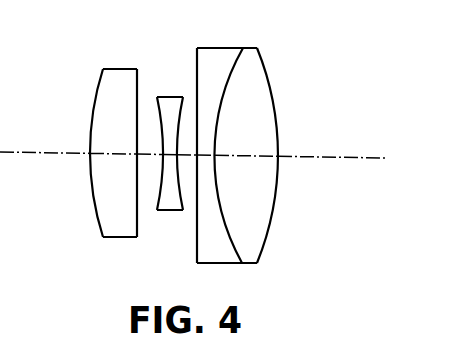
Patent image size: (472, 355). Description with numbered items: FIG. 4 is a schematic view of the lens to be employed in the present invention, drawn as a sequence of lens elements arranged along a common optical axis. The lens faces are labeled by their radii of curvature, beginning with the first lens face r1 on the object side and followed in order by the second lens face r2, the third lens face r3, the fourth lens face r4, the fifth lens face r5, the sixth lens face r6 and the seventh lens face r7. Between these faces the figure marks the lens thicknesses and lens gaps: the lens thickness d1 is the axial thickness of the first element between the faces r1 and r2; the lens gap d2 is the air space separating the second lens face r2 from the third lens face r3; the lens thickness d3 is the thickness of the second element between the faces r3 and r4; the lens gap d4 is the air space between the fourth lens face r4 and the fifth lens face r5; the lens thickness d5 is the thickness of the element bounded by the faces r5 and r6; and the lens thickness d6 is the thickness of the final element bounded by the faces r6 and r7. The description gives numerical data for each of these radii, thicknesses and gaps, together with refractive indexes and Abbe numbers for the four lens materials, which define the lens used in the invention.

The radius of curvature of the first lens face r1 is at (100, 89).
The radius of curvature of the second lens face r2 is at (136, 85).
The radius of curvature of the third lens face r3 is at (157, 108).
The radius of curvature of the fourth lens face r4 is at (182, 112).
The radius of curvature of the fifth lens face r5 is at (198, 66).
The radius of curvature of the sixth lens face r6 is at (234, 67).
The radius of curvature of the seventh lens face r7 is at (265, 70).
The lens thickness d1 is at (106, 157).
The lens gap d2 is at (146, 158).
The lens thickness d3 is at (164, 148).
The lens gap d4 is at (190, 153).
The lens thickness d5 is at (205, 160).
The lens thickness d6 is at (260, 155).